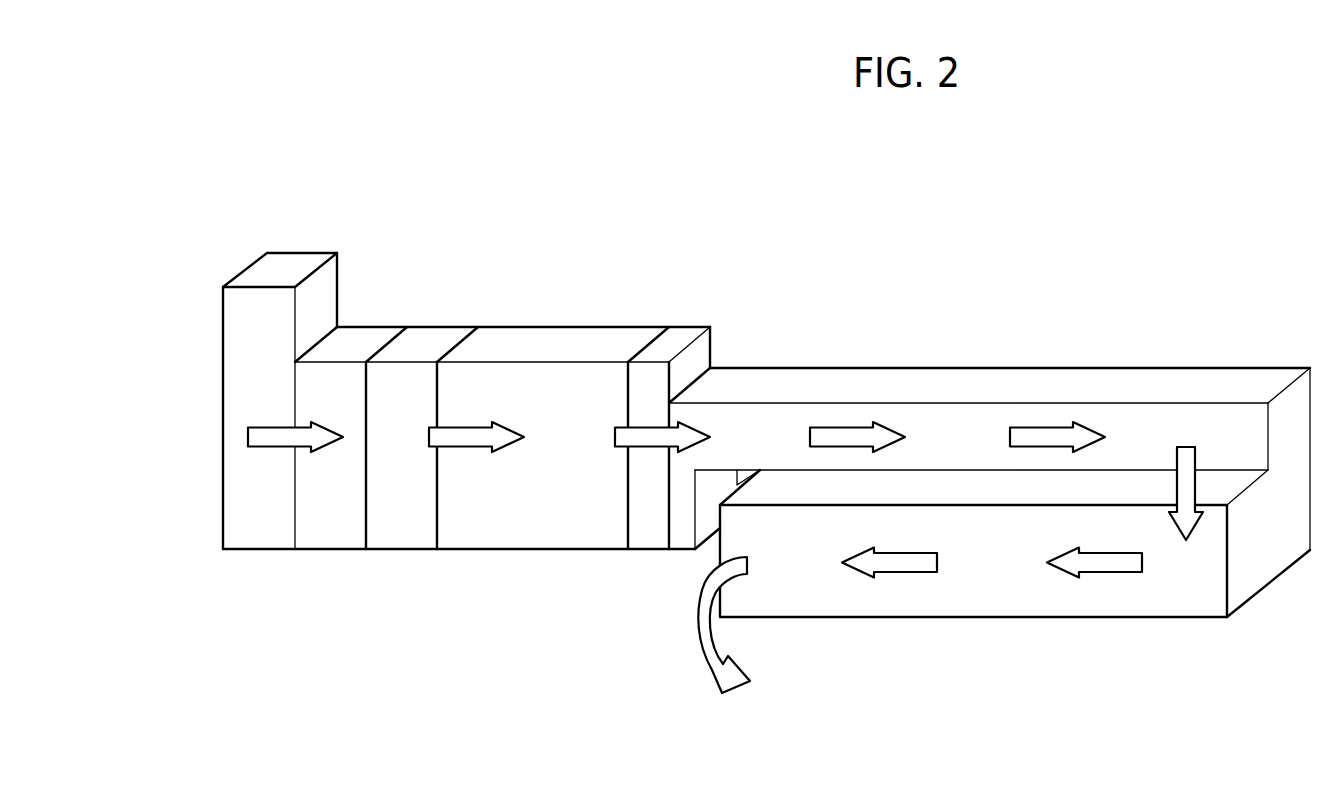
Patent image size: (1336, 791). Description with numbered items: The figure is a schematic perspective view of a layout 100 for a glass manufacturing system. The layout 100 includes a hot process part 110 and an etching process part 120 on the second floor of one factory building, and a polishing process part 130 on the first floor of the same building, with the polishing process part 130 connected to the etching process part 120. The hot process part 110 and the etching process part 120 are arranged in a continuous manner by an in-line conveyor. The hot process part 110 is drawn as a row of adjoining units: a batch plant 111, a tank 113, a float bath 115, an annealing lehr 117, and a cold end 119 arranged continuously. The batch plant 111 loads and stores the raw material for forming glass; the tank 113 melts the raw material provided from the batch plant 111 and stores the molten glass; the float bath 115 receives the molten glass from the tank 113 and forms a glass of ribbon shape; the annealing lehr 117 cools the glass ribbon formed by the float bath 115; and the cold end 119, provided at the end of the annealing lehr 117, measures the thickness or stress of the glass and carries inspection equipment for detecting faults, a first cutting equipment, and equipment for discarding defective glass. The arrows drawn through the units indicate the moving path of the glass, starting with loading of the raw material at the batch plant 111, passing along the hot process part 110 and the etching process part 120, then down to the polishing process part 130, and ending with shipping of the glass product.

The layout 100 is at (699, 459).
The hot process part 110 is at (466, 382).
The batch plant 111 is at (306, 250).
The tank 113 is at (370, 326).
The float bath 115 is at (440, 326).
The annealing lehr 117 is at (575, 326).
The cold end 119 is at (693, 326).
The etching process part 120 is at (1022, 360).
The polishing process part 130 is at (1022, 627).